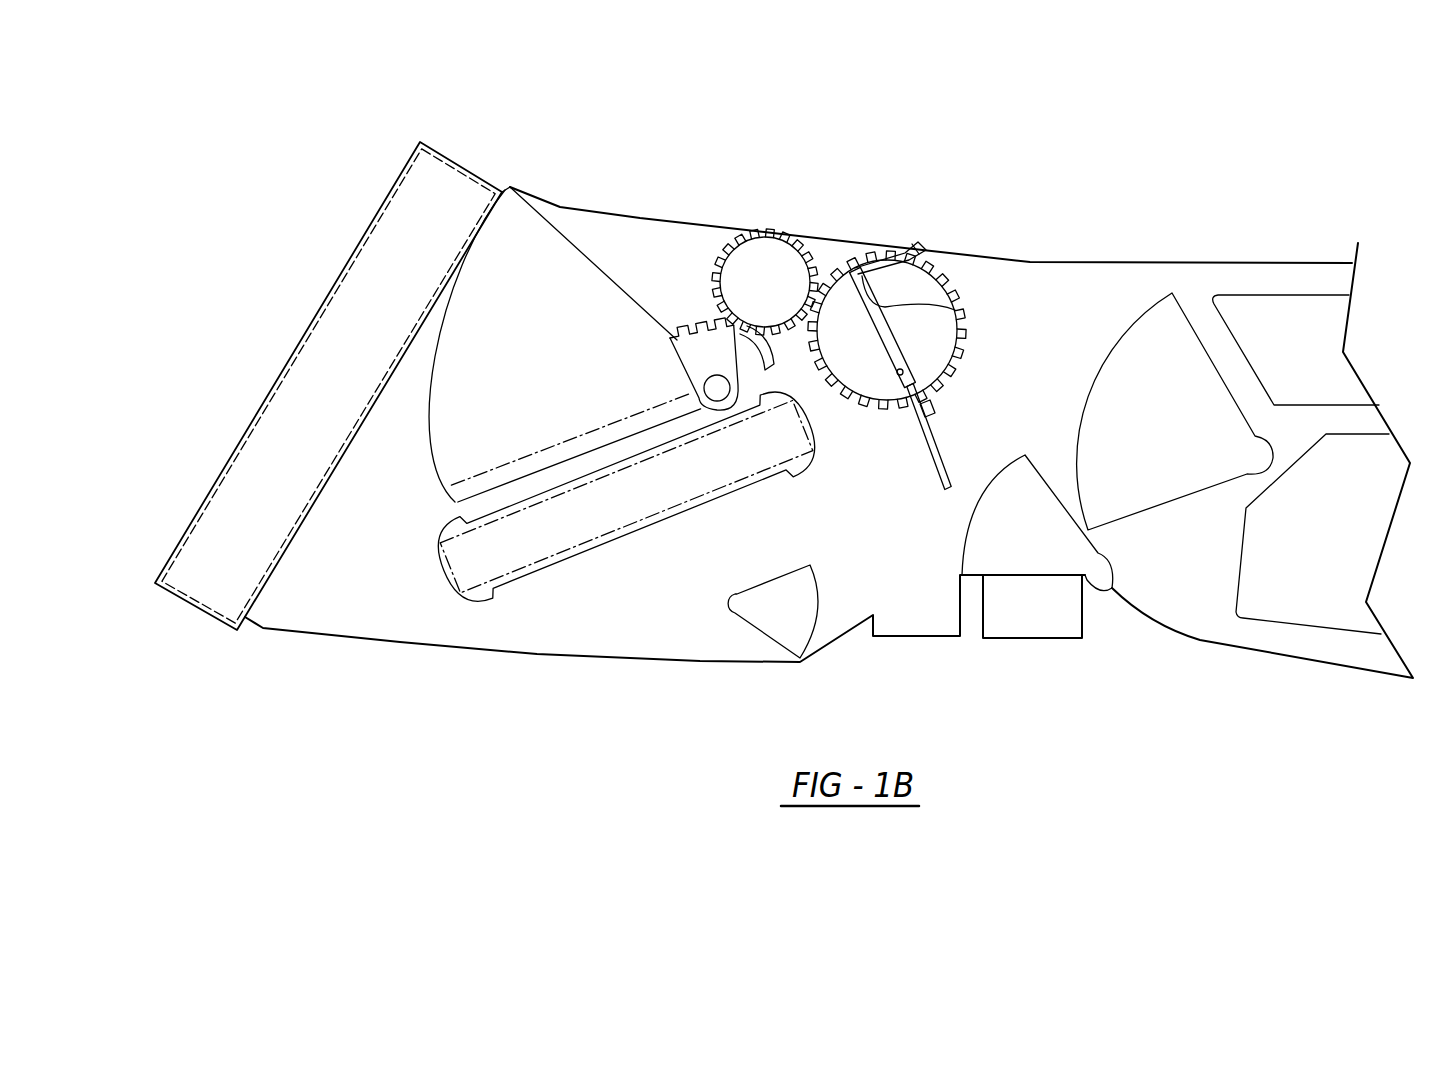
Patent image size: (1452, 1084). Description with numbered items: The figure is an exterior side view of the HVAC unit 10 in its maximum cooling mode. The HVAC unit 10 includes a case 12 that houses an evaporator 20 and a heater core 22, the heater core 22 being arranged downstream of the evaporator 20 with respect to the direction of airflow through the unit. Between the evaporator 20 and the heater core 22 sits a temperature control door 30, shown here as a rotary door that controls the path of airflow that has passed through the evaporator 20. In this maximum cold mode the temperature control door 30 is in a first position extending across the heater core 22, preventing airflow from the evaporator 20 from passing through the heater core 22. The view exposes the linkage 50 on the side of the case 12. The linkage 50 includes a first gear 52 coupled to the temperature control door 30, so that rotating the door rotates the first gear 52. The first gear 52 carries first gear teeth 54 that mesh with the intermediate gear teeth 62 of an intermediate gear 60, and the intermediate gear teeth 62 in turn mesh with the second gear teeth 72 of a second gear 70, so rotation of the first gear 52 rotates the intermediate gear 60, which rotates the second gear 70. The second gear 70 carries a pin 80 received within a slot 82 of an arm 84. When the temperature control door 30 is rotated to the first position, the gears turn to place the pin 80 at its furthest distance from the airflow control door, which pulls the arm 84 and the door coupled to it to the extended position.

The HVAC unit 10 is at (1093, 132).
The case 12 is at (1133, 262).
The evaporator 20 is at (367, 312).
The heater core 22 is at (550, 540).
The temperature control door 30 is at (528, 465).
The linkage 50 is at (763, 205).
The first gear 52 is at (697, 357).
The first gear teeth 54 is at (695, 333).
The intermediate gear 60 is at (771, 268).
The intermediate gear teeth 62 is at (721, 258).
The second gear 70 is at (921, 282).
The second gear teeth 72 is at (835, 273).
The pin 80 is at (955, 310).
The slot 82 is at (909, 255).
The arm 84 is at (882, 343).